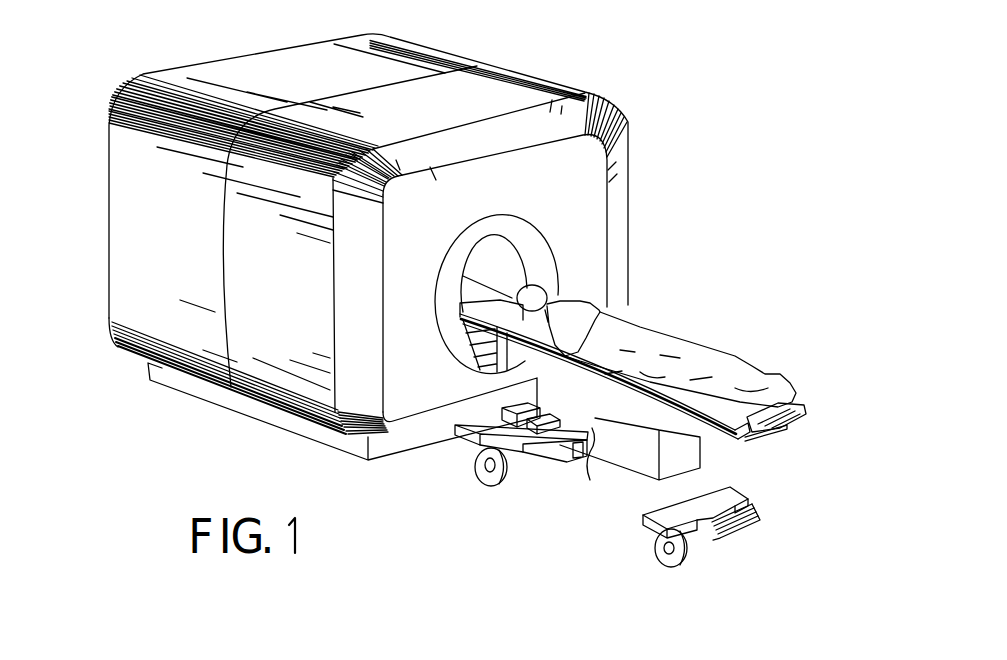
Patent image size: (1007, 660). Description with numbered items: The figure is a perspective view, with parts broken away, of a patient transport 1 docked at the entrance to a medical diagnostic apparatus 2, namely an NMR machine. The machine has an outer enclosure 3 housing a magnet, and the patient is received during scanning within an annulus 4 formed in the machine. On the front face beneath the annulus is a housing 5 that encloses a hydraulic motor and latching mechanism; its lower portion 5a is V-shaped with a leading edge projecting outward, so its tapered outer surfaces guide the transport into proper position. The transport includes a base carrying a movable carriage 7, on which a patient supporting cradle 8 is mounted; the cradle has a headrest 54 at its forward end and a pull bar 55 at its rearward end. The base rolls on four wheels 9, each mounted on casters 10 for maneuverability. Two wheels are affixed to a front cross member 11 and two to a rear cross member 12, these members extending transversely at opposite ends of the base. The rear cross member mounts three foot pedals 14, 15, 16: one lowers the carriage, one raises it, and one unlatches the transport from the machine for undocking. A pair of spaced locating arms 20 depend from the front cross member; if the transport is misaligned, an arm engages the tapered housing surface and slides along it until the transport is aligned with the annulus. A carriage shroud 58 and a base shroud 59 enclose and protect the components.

The patient transport 1 is at (718, 350).
The medical diagnostic apparatus 2 is at (558, 83).
The outer enclosure 3 is at (173, 307).
The annulus 4 is at (507, 250).
The housing 5 is at (462, 433).
The lower portion of housing 5a is at (533, 453).
The carriage 7 is at (803, 413).
The cradle 8 is at (787, 402).
The wheels 9 is at (488, 483).
The casters 10 is at (487, 457).
The front cross member 11 is at (513, 442).
The rear cross member 12 is at (745, 495).
The foot pedal 14 is at (737, 543).
The foot pedal 15 is at (747, 540).
The foot pedal 16 is at (757, 537).
The locating arms 20 is at (553, 447).
The headrest 54 is at (460, 313).
The pull bar 55 is at (780, 440).
The carriage shroud 58 is at (643, 460).
The base shroud 59 is at (597, 472).